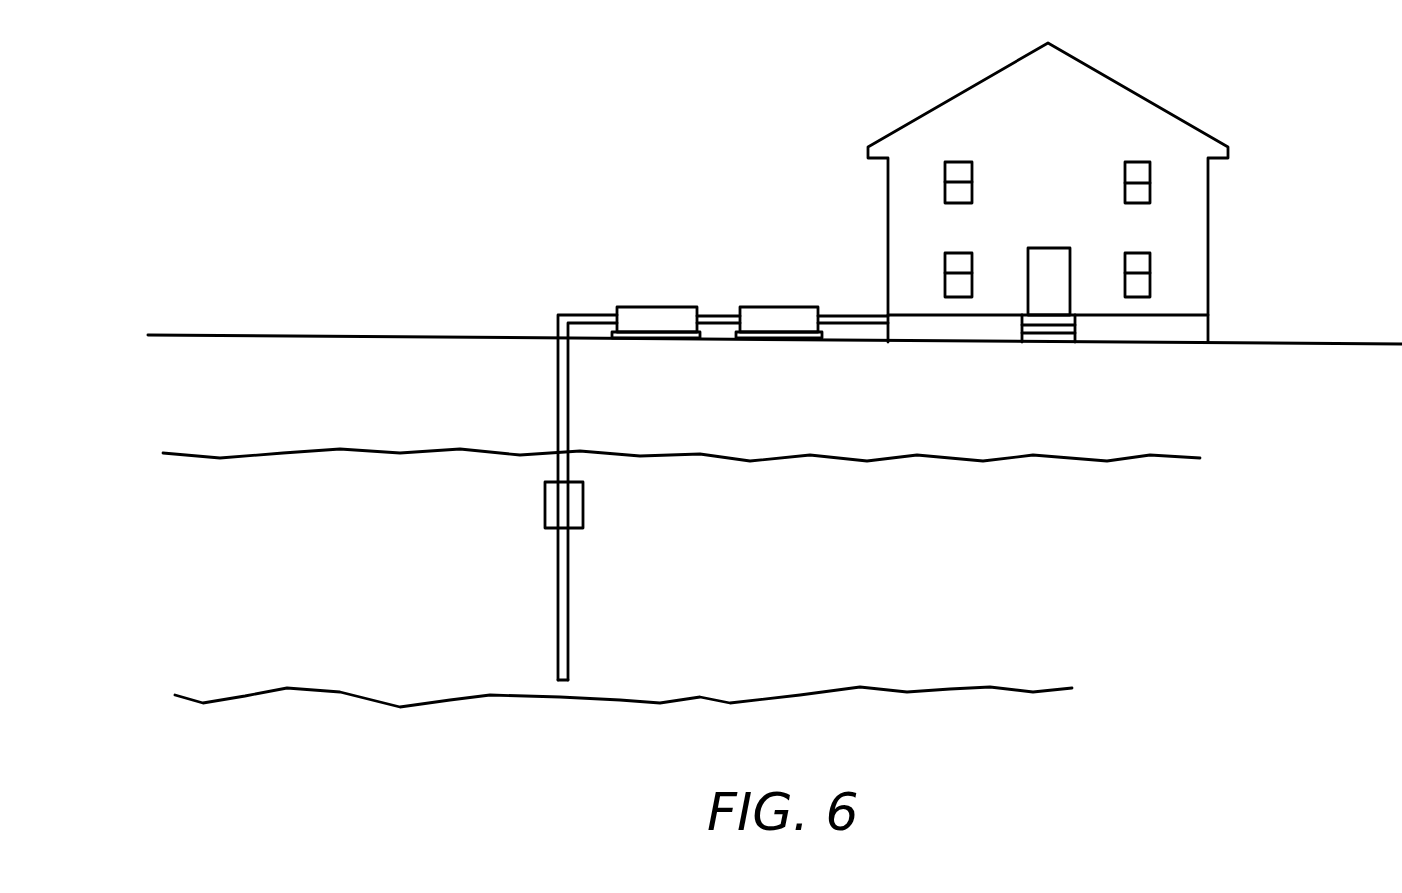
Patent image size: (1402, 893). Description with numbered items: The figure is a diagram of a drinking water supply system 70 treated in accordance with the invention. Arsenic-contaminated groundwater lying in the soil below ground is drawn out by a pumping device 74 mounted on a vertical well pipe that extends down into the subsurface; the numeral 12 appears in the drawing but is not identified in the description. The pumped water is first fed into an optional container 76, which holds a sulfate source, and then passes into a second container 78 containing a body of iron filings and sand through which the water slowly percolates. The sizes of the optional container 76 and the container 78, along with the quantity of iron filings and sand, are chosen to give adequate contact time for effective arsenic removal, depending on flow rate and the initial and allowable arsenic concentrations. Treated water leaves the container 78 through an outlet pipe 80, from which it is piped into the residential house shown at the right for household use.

The drinking water supply system 70 is at (655, 172).
The pumping device 74 is at (544, 505).
The optional container 76 is at (661, 306).
The container 78 is at (797, 306).
The outlet pipe 80 is at (870, 315).
The aquifer/soil stratum 12 is at (690, 584).